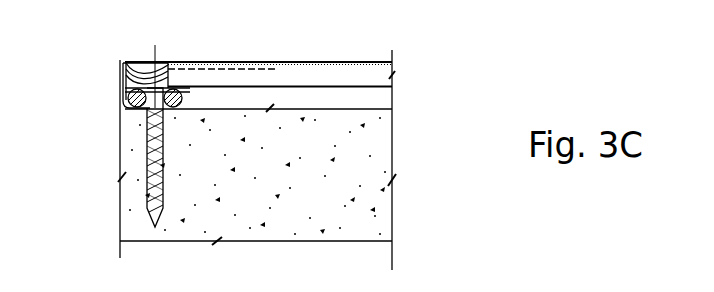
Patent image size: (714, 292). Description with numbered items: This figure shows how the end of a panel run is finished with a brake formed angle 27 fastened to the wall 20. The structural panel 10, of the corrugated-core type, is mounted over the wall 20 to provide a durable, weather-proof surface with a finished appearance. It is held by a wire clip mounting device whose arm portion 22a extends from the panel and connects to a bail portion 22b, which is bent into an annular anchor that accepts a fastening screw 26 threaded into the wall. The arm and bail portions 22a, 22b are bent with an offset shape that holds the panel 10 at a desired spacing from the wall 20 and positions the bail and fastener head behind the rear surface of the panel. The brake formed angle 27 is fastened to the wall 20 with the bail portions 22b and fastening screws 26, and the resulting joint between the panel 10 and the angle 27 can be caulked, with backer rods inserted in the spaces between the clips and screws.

The structural panel 10 is at (262, 61).
The wall 20 is at (279, 268).
The arm portion 22a is at (276, 70).
The bail portion 22b is at (128, 99).
The fastening screw 26 is at (150, 147).
The brake formed angle 27 is at (113, 62).